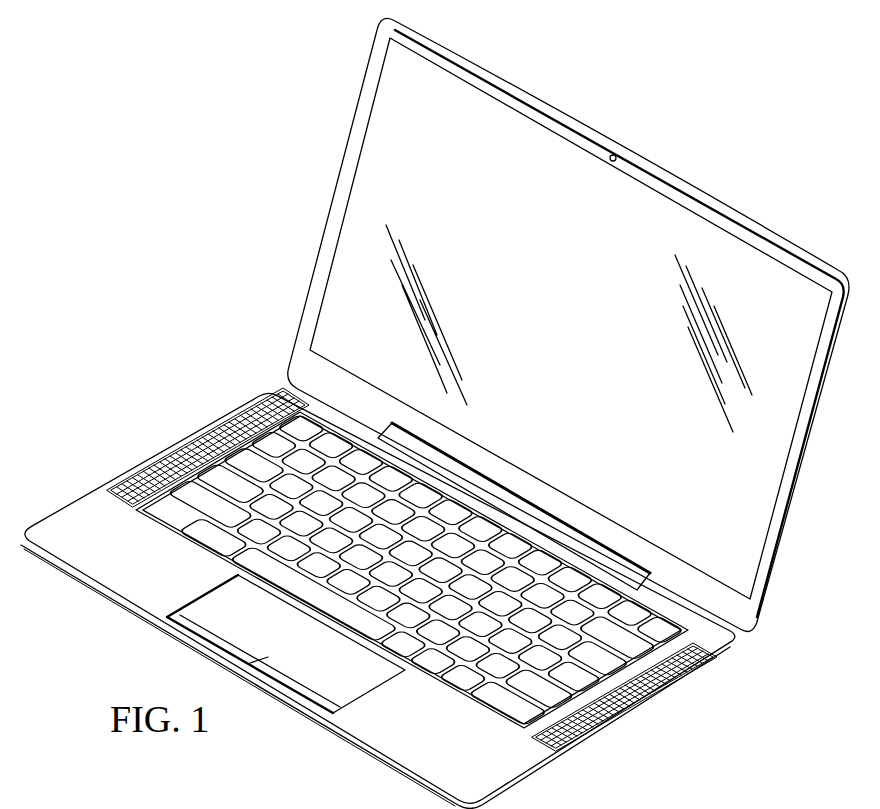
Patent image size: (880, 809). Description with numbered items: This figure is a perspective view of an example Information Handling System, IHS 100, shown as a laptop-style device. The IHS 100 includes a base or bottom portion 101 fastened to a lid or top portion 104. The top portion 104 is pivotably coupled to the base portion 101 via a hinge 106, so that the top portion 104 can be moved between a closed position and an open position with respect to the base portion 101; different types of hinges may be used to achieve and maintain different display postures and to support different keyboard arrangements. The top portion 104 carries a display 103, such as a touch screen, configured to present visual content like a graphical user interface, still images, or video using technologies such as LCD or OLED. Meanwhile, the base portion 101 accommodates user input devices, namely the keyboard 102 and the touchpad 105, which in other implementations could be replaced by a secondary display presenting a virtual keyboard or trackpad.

The Information Handling System 100 is at (670, 92).
The base portion 101 is at (67, 512).
The keyboard 102 is at (218, 534).
The display 103 is at (578, 339).
The top portion 104 is at (372, 165).
The touchpad 105 is at (360, 682).
The hinge 106 is at (522, 480).